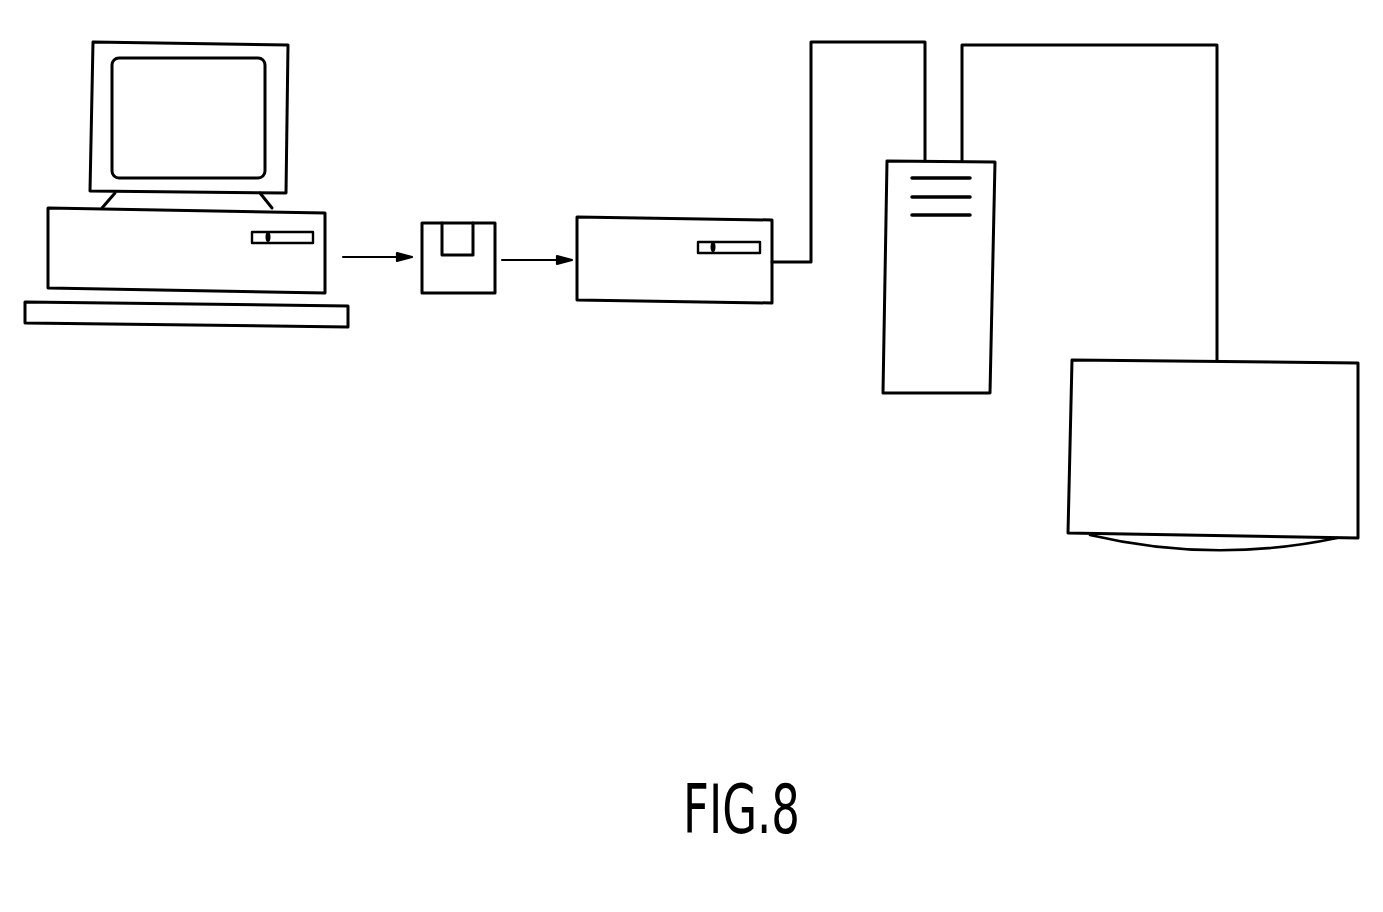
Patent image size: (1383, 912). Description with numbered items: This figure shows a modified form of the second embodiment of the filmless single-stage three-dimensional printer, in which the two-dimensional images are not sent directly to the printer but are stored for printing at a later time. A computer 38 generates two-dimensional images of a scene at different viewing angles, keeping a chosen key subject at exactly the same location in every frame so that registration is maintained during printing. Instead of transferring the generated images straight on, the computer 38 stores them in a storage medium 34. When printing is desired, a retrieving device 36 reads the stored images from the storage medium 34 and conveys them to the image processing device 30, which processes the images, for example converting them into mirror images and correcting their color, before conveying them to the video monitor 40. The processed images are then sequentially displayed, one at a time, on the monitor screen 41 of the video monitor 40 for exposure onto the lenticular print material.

The image processing device 30 is at (982, 252).
The storage medium 34 is at (480, 282).
The retrieving device 36 is at (730, 288).
The computer 38 is at (313, 215).
The video monitor 40 is at (1293, 375).
The monitor screen 41 is at (1167, 543).